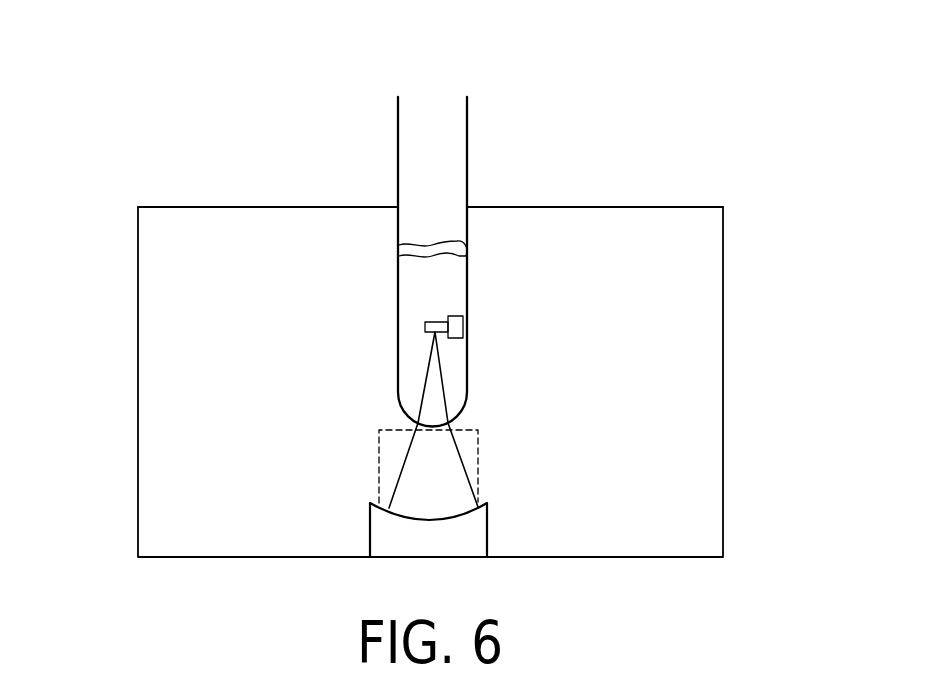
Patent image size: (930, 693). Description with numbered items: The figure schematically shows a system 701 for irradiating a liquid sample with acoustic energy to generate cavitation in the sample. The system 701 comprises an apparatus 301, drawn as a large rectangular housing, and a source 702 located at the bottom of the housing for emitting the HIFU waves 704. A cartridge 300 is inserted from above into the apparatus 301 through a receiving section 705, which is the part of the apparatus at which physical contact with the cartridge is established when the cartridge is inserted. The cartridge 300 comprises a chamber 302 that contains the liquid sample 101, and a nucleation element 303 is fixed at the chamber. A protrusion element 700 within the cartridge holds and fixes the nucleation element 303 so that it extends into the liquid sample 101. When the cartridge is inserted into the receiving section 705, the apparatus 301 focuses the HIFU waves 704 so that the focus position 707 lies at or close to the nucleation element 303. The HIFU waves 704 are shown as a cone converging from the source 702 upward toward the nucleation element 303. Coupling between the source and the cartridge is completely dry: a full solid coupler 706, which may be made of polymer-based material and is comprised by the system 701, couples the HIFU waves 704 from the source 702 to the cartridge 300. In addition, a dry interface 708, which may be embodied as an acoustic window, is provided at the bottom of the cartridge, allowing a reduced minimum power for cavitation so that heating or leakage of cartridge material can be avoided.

The apparatus 301 is at (124, 261).
The chamber 302 is at (431, 110).
The cartridge 300 is at (467, 280).
The receiving section 705 is at (397, 207).
The liquid sample 101 is at (410, 283).
The nucleation element 303 is at (425, 327).
The protrusion element 700 is at (463, 327).
The focus position 707 is at (413, 340).
The HIFU waves 704 is at (462, 373).
The dry interface 708 is at (428, 432).
The full solid coupler 706 is at (479, 470).
The source 702 is at (488, 534).
The system 701 is at (740, 186).